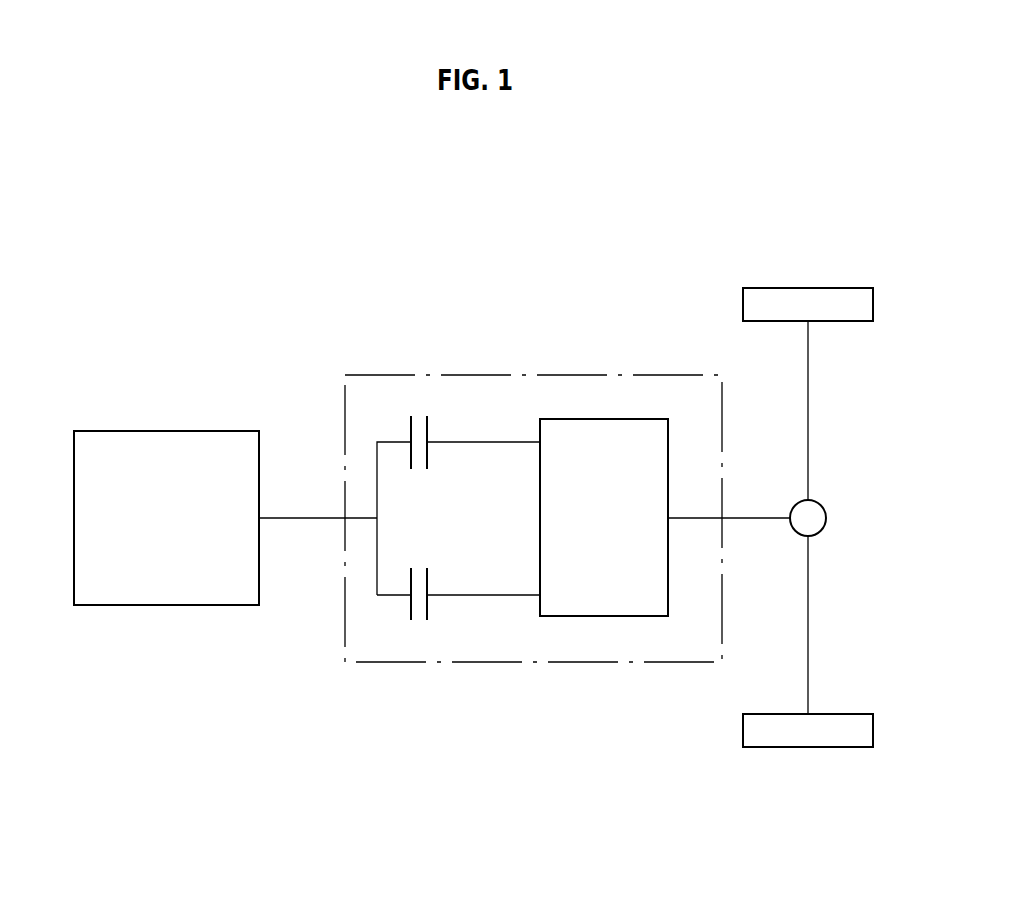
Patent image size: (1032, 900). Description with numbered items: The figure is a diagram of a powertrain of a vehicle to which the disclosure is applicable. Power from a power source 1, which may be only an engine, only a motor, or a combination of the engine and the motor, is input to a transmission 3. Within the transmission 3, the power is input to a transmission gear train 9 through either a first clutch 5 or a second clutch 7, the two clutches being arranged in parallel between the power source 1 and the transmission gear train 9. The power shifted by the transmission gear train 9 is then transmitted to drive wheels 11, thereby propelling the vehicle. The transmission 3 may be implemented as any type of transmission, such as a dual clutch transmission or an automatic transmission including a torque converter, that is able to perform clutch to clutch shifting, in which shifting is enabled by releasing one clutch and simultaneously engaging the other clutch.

The power source 1 is at (163, 431).
The transmission 3 is at (488, 375).
The first clutch 5 is at (418, 411).
The second clutch 7 is at (418, 625).
The transmission gear train 9 is at (604, 617).
The drive wheels 11 is at (818, 288).